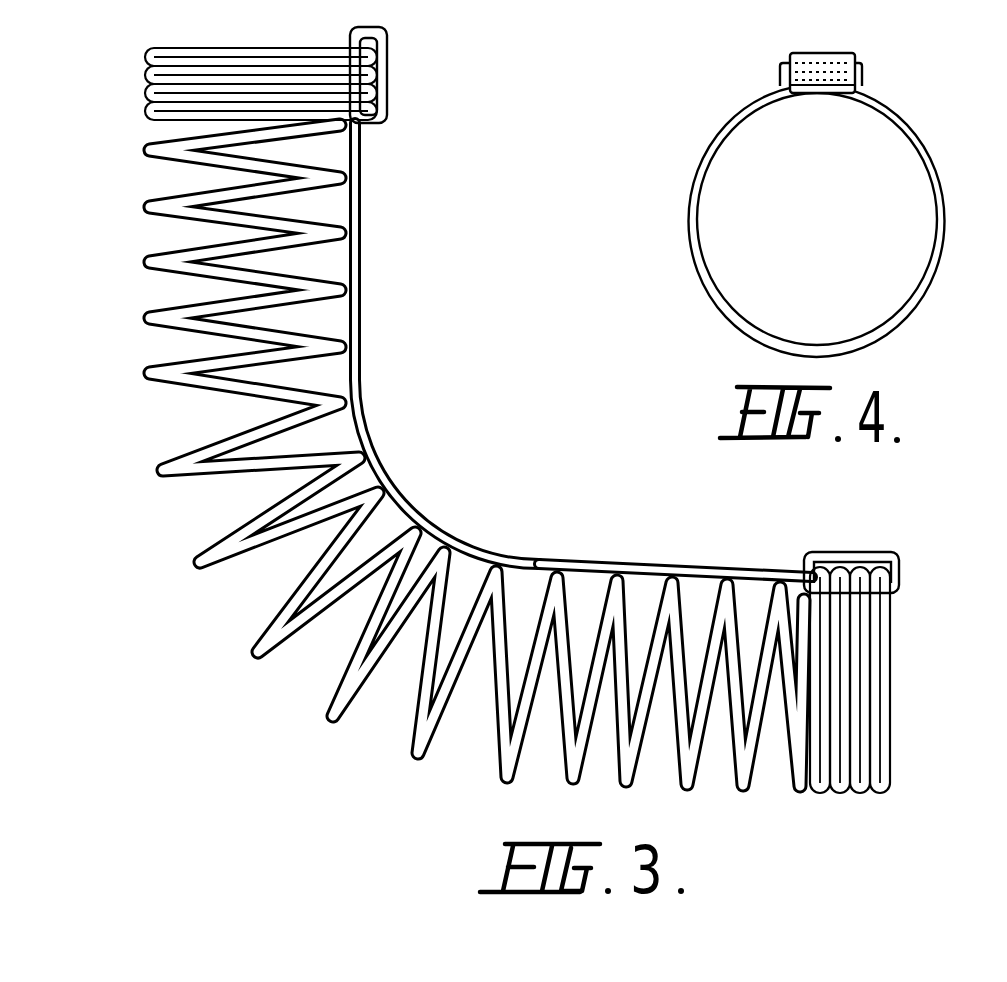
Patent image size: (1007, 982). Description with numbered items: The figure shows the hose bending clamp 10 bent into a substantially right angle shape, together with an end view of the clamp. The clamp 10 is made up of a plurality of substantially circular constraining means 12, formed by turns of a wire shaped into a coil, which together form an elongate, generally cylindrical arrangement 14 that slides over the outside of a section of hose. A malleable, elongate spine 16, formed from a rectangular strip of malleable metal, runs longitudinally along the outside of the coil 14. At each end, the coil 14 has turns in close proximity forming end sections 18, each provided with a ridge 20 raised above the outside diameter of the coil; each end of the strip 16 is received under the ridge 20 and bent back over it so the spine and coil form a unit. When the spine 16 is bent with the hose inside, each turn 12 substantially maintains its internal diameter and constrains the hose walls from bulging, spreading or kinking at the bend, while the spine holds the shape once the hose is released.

In FIG. 3, the hose bending clamp 10 is at (468, 418).
In FIG. 3, the substantially circular constraining means 12 is at (333, 718).
In FIG. 3, the elongate, generally cylindrical arrangement 14 is at (910, 679).
In FIG. 3, the malleable, elongate spine 16 is at (525, 566).
In FIG. 4, the end section 18 is at (688, 240).
In FIG. 4, the ridge 20 is at (864, 74).